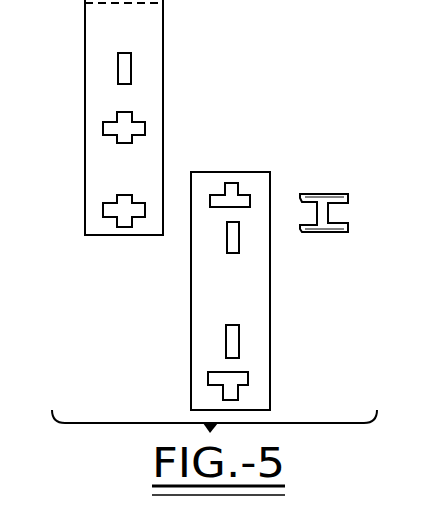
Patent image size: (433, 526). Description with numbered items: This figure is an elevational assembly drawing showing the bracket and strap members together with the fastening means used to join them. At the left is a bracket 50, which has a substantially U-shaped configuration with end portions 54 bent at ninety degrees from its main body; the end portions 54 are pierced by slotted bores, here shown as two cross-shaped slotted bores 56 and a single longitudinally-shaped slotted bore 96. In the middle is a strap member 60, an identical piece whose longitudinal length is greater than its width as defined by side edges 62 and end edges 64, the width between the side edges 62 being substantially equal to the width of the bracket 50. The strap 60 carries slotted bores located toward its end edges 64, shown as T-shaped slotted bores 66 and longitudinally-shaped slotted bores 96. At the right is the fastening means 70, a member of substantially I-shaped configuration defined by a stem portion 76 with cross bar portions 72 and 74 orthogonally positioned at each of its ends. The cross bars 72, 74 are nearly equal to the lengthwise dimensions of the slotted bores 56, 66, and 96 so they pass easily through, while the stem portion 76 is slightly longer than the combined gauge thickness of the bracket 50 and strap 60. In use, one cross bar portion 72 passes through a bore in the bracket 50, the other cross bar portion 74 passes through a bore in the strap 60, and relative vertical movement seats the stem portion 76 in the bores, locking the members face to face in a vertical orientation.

The bracket 50 is at (132, 117).
The end portion 54 is at (92, 63).
The cross-shaped slotted bore 56 is at (110, 128).
The strap member 60 is at (219, 259).
The side edge 62 is at (238, 259).
The end edge 64 is at (250, 172).
The T-shaped slotted bore 66 is at (229, 186).
The fastening means 70 is at (357, 195).
The cross bar portion 72 is at (357, 195).
The cross bar portion 74 is at (357, 217).
The stem portion 76 is at (330, 212).
The longitudinally-shaped slotted bore 96 is at (121, 72).